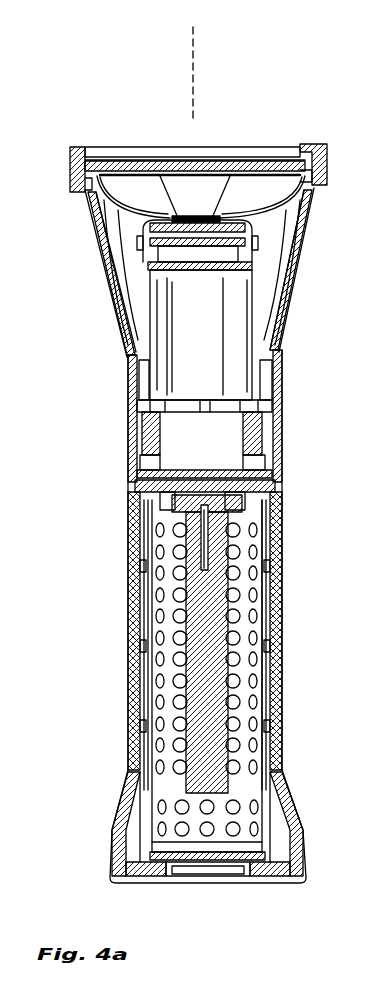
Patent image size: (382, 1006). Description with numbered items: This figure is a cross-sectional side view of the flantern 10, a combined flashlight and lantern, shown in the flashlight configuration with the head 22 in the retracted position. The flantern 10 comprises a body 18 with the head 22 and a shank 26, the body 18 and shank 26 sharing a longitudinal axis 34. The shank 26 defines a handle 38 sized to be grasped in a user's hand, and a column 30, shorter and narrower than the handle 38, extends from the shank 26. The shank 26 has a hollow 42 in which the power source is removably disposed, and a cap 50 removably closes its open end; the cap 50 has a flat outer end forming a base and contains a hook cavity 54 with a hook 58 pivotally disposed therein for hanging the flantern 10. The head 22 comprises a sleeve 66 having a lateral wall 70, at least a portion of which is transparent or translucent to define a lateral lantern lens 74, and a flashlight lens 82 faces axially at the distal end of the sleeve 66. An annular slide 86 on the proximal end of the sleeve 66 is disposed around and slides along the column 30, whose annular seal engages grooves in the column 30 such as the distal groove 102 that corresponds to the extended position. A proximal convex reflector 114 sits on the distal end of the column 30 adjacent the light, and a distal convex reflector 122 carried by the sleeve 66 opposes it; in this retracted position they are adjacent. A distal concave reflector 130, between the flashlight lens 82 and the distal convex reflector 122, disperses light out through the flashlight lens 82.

The flantern 10 is at (92, 812).
The body 18 is at (128, 550).
The head 22 is at (68, 158).
The shank 26 is at (128, 676).
The column 30 is at (148, 294).
The longitudinal axis 34 is at (190, 55).
The handle 38 is at (282, 576).
The hollow 42 is at (282, 690).
The cap 50 is at (295, 806).
The hook cavity 54 is at (240, 880).
The hook 58 is at (202, 880).
The sleeve 66 is at (90, 230).
The lateral wall 70 is at (307, 224).
The lateral lantern lens 74 is at (292, 327).
The flashlight lens 82 is at (245, 167).
The annular slide 86 is at (277, 363).
The distal groove 102 is at (268, 245).
The proximal convex reflector 114 is at (105, 213).
The distal convex reflector 122 is at (138, 195).
The distal concave reflector 130 is at (185, 195).